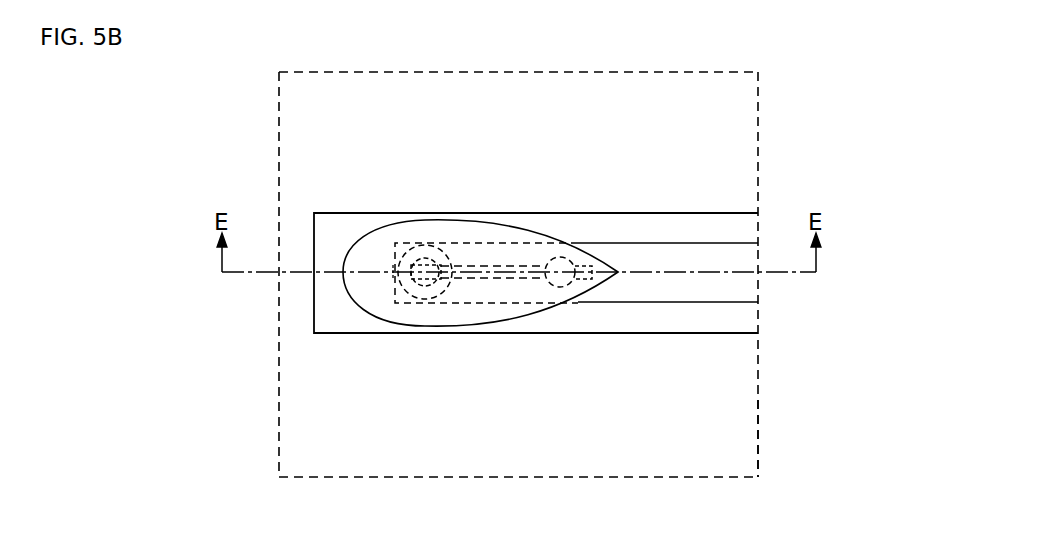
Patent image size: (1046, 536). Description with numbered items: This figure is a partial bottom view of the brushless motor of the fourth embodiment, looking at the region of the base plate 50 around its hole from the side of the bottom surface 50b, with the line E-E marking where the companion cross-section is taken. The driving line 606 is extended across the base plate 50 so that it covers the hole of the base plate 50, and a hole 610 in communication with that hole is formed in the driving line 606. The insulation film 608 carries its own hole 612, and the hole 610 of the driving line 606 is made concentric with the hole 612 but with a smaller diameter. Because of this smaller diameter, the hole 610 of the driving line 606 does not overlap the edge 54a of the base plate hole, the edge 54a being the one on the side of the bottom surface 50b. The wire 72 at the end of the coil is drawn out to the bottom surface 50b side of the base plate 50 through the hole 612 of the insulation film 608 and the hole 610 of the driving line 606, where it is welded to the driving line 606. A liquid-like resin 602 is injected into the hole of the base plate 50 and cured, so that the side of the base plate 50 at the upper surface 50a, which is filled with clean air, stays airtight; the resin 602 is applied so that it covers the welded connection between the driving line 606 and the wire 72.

The base plate 50 is at (742, 424).
The upper surface 50a is at (738, 116).
The bottom surface 50b is at (742, 460).
The insulation film 608 is at (760, 222).
The driving line 606 is at (745, 287).
The resin 602 is at (374, 298).
The edge of hole 54a is at (397, 255).
The hole of insulation film 612 is at (425, 250).
The hole of driving line 610 is at (427, 293).
The wire 72 is at (518, 268).